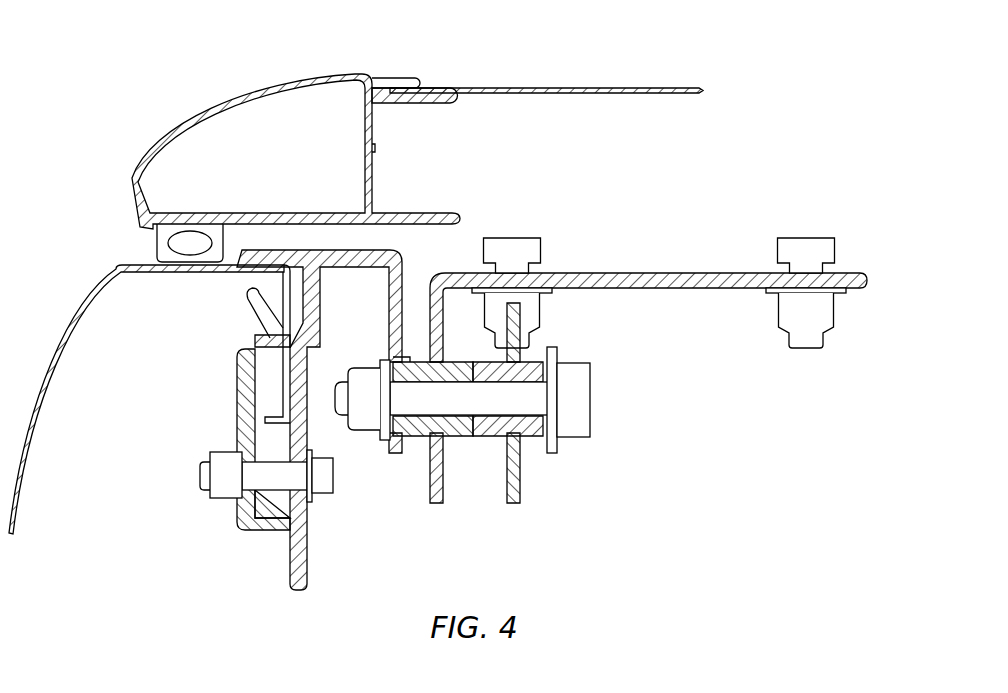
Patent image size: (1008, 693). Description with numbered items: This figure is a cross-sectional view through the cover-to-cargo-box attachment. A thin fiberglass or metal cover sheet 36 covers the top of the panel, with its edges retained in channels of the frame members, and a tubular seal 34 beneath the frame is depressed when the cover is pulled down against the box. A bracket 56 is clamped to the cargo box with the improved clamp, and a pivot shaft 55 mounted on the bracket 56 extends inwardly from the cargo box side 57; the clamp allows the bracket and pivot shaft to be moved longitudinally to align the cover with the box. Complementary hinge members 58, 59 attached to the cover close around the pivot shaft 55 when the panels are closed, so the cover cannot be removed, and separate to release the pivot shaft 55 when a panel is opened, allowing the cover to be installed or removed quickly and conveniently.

The tubular seal 34 is at (197, 258).
The cover sheet 36 is at (623, 98).
The pivot shaft 55 is at (487, 440).
The bracket 56 is at (297, 593).
The cargo box side 57 is at (48, 403).
The complementary hinge member 58 is at (440, 505).
The complementary hinge member 59 is at (512, 505).